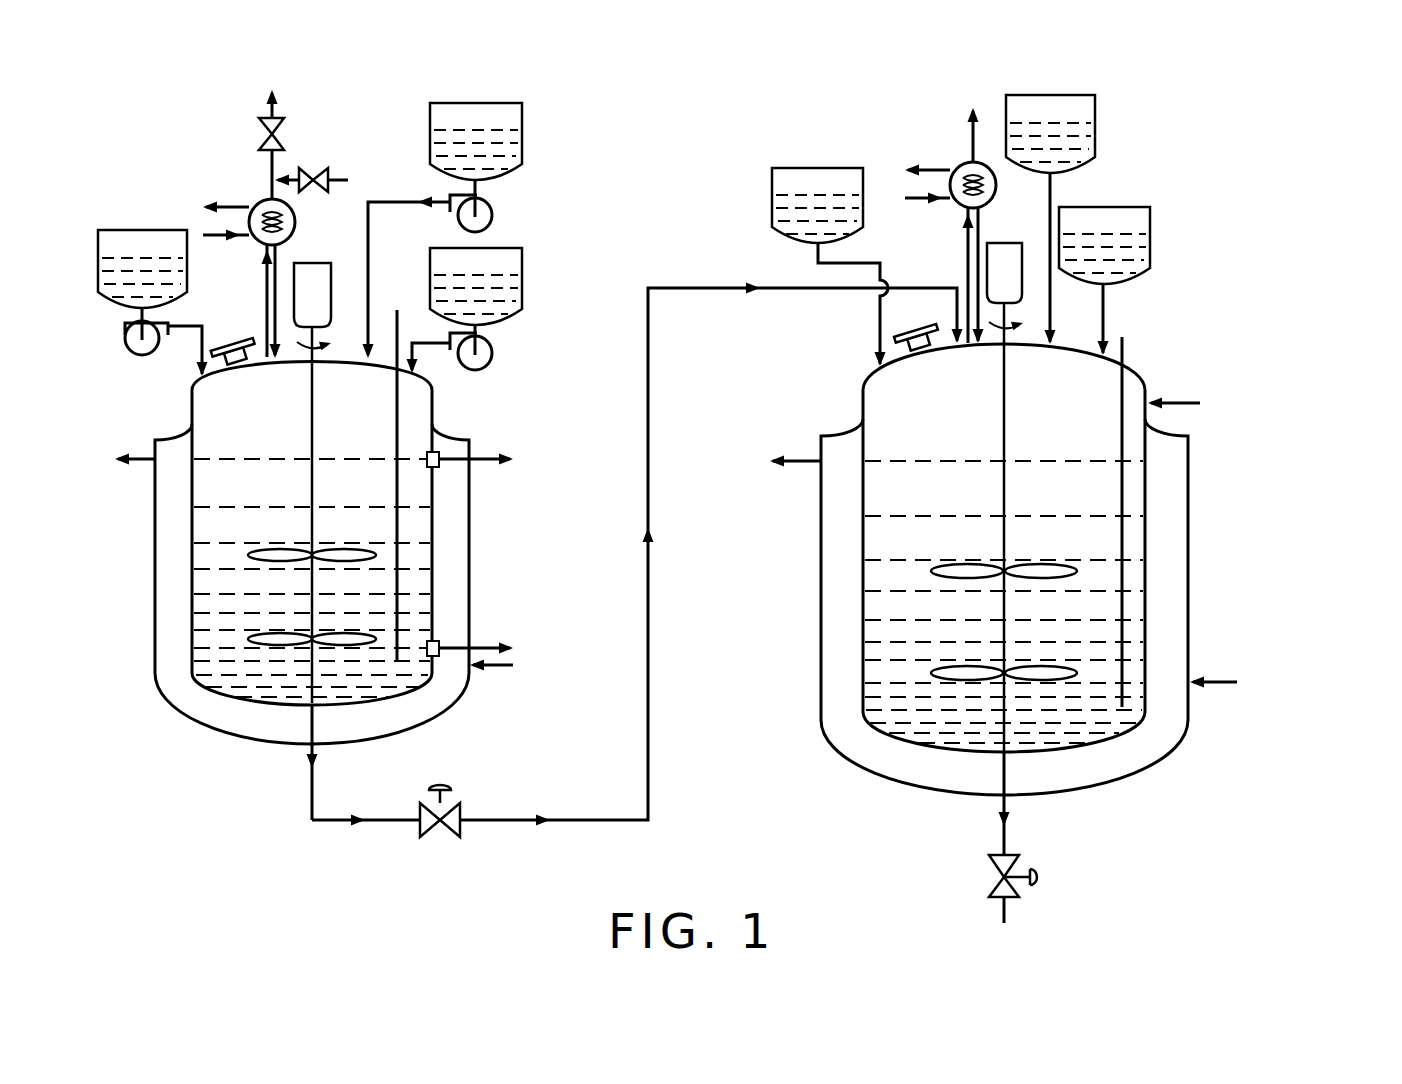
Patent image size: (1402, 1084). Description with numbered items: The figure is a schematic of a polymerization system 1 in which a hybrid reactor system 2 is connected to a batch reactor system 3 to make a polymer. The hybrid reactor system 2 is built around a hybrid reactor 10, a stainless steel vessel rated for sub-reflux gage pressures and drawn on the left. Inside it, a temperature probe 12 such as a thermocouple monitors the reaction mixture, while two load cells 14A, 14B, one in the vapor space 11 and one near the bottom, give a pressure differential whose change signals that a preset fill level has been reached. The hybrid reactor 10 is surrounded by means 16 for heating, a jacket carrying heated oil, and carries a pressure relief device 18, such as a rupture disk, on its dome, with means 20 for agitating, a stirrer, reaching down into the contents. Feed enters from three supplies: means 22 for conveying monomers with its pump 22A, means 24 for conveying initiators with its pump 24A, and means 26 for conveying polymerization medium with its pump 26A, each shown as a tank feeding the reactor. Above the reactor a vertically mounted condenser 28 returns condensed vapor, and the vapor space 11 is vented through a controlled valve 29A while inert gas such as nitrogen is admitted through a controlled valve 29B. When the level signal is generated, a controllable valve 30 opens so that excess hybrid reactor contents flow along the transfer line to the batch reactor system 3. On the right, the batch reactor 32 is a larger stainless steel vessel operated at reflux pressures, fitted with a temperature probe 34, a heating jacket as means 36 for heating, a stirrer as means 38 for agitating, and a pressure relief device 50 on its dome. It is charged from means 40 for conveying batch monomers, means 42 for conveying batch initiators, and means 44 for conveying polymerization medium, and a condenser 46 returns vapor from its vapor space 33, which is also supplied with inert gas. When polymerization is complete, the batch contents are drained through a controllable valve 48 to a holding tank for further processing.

The polymerization system 1 is at (1212, 136).
The hybrid reactor system 2 is at (138, 679).
The batch reactor system 3 is at (821, 751).
The hybrid reactor 10 is at (243, 699).
The vapor space 11 is at (372, 425).
The temperature probe 12 is at (398, 327).
The load cell 14A is at (490, 464).
The load cell 14B is at (487, 644).
The means for heating 16 is at (423, 701).
The pressure relief device 18 is at (244, 340).
The means for agitating 20 is at (305, 403).
The means for conveying hybrid reactor mixtures 22 is at (522, 120).
The means for pumping 22A is at (492, 215).
The means for conveying hybrid reactor initiators 24 is at (522, 287).
The means for pumping 24A is at (486, 367).
The means for conveying polymerization medium 26 is at (98, 268).
The means for pumping 26A is at (132, 350).
The condenser 28 is at (259, 206).
The controlled valve 29A is at (259, 114).
The controlled valve 29B is at (318, 167).
The controllable valve 30 is at (456, 802).
The batch reactor 32 is at (955, 752).
The vapor space 33 is at (1073, 420).
The temperature probe 34 is at (1122, 483).
The means for heating 36 is at (1150, 740).
The means for agitating 38 is at (1006, 382).
The means for conveying batch reactor mixtures 40 is at (772, 210).
The means for conveying batch reactor initiators 42 is at (1138, 282).
The means for conveying polymerization medium 44 is at (1095, 163).
The condenser 46 is at (958, 165).
The controllable valve 48 is at (1020, 855).
The pressure relief device 50 is at (927, 328).